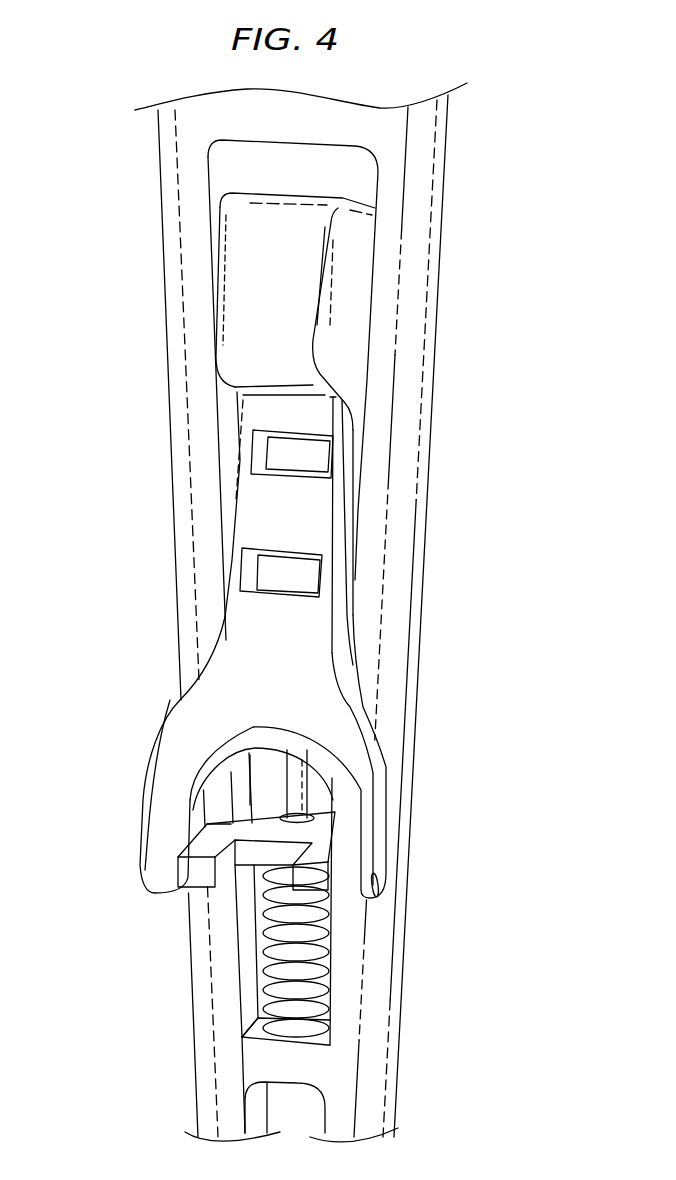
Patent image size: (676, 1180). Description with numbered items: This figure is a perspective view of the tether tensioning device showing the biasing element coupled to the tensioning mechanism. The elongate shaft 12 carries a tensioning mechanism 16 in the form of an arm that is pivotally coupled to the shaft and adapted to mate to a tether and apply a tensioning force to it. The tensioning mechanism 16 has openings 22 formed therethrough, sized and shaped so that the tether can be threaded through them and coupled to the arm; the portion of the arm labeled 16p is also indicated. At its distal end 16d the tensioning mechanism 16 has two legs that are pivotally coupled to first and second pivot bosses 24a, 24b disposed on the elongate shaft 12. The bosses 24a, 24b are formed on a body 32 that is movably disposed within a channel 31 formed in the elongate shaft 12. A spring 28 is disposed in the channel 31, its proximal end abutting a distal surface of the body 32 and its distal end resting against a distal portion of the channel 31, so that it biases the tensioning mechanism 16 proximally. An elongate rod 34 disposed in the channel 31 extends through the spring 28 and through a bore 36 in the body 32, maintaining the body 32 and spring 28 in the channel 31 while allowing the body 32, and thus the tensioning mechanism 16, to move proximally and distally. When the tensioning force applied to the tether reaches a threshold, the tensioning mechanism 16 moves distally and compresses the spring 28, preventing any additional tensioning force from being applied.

The elongate shaft 12 is at (445, 177).
The tensioning mechanism 16 is at (262, 568).
The push portion of clip 16p is at (222, 197).
The distal end of the tensioning mechanism 16d is at (119, 882).
The openings 22 is at (316, 465).
The first pivot boss 24a is at (195, 877).
The second pivot boss 24b is at (302, 882).
The spring 28 is at (322, 947).
The channel 31 is at (247, 973).
The body 32 is at (281, 857).
The elongate rod 34 is at (290, 793).
The bore 36 is at (310, 817).